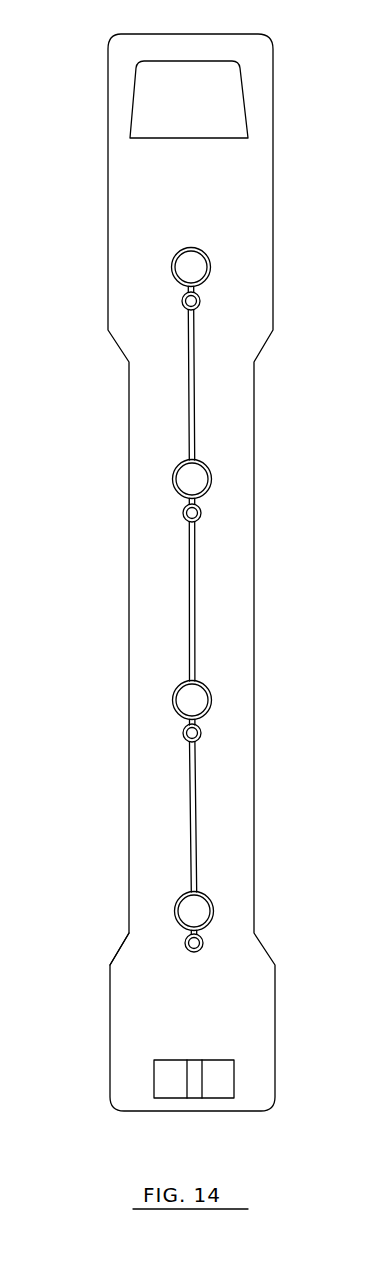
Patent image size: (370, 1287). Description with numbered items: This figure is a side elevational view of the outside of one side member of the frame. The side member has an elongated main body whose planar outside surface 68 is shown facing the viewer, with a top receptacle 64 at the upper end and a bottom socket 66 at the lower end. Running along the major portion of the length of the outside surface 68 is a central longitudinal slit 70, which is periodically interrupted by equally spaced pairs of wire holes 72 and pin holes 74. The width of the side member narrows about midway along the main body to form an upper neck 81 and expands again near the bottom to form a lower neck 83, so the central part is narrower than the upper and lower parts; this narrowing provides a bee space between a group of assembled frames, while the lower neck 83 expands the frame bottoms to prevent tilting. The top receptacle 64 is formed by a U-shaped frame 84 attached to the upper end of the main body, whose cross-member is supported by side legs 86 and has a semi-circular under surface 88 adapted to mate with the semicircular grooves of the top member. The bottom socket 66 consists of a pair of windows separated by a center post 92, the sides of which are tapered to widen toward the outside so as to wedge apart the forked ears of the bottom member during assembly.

The top receptacle 64 is at (182, 105).
The bottom socket 66 is at (217, 1080).
The outside surface 68 is at (160, 422).
The central longitudinal slit 70 is at (187, 603).
The wire holes 72 is at (187, 301).
The pin holes 74 is at (188, 267).
The upper neck 81 is at (117, 348).
The lower neck 83 is at (123, 942).
The U-shaped frame 84 is at (122, 78).
The side legs 86 is at (260, 91).
The semi-circular under surface 88 is at (197, 61).
The center post 92 is at (187, 1080).